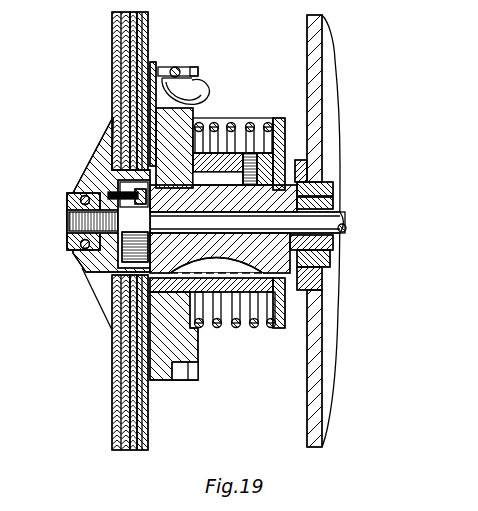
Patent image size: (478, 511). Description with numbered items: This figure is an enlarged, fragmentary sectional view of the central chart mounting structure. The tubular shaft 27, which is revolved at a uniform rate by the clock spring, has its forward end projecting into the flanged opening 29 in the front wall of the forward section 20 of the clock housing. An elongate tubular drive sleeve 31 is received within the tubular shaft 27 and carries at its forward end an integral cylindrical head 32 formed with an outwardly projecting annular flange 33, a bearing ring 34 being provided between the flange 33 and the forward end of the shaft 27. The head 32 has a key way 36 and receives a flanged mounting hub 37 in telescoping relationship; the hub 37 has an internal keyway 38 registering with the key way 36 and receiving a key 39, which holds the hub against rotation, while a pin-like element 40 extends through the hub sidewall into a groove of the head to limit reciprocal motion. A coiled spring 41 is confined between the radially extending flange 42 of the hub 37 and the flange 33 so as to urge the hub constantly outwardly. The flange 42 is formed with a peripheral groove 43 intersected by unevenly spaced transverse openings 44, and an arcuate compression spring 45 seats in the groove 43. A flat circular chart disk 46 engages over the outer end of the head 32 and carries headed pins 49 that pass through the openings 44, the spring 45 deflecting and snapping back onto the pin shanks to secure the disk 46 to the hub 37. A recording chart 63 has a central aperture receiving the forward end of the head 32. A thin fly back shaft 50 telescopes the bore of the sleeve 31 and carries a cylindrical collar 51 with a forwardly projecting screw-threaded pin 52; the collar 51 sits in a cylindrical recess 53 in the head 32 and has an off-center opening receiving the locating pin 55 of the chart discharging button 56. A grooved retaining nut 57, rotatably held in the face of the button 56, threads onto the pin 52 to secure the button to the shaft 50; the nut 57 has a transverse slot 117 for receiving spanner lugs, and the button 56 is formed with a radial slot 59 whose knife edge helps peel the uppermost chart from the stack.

The forward section 20 is at (313, 102).
The tubular shaft 27 is at (323, 192).
The flanged opening 29 is at (323, 165).
The drive sleeve 31 is at (329, 207).
The cylindrical head 32 is at (197, 243).
The annular flange 33 is at (277, 332).
The bearing ring 34 is at (292, 265).
The key way 36 is at (237, 271).
The mounting hub 37 is at (147, 327).
The internal keyway 38 is at (202, 326).
The key 39 is at (240, 326).
The pin-like element 40 is at (288, 140).
The coiled spring 41 is at (252, 155).
The flange 42 is at (157, 370).
The peripheral groove 43 is at (186, 380).
The transverse openings 44 is at (163, 66).
The arcuate compression spring 45 is at (182, 70).
The chart disk 46 is at (148, 438).
The headed pins 49 is at (190, 113).
The fly back shaft 50 is at (339, 223).
The cylindrical collar 51 is at (107, 258).
The screw-threaded pin 52 is at (78, 217).
The cylindrical recess 53 is at (86, 171).
The locating pin 55 is at (110, 195).
The chart discharging button 56 is at (222, 185).
The retaining nut 57 is at (84, 198).
The radial slot 59 is at (96, 289).
The recording chart 63 is at (144, 344).
The transverse slot 117 is at (80, 240).